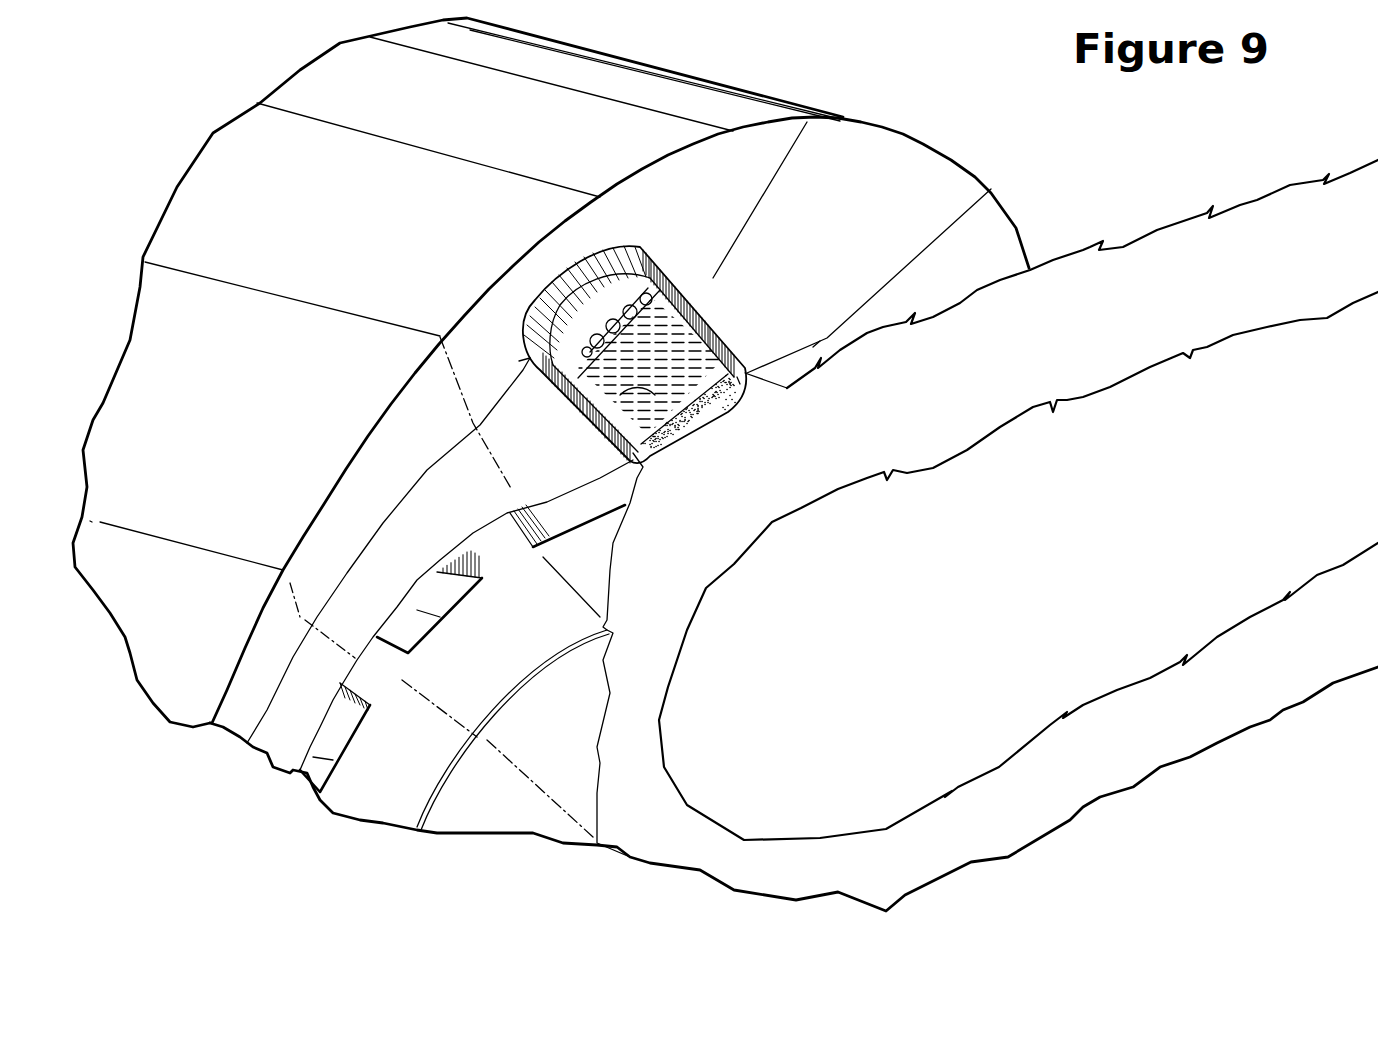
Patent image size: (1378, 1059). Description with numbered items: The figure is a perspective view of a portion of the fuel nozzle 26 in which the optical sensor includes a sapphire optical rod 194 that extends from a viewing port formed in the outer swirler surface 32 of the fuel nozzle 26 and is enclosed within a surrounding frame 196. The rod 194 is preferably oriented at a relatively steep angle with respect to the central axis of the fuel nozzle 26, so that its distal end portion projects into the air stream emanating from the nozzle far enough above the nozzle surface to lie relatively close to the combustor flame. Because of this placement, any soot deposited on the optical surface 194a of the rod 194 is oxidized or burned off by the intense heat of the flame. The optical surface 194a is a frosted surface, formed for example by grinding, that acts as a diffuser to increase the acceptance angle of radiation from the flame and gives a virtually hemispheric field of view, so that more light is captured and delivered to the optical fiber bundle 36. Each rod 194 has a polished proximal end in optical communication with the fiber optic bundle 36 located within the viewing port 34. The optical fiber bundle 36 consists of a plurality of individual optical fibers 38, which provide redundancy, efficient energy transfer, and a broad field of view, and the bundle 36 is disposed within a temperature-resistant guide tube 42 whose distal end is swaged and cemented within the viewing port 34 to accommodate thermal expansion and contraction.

The outer swirler surface 32 is at (824, 153).
The fuel nozzle 26 is at (699, 296).
The viewing port 34 is at (628, 247).
The optical fiber bundle 36 is at (562, 321).
The optical fibers 38 is at (612, 288).
The guide tube 42 is at (519, 361).
The sapphire optical rod 194 is at (608, 420).
The optical surface 194a is at (704, 420).
The surrounding frame 196 is at (713, 365).